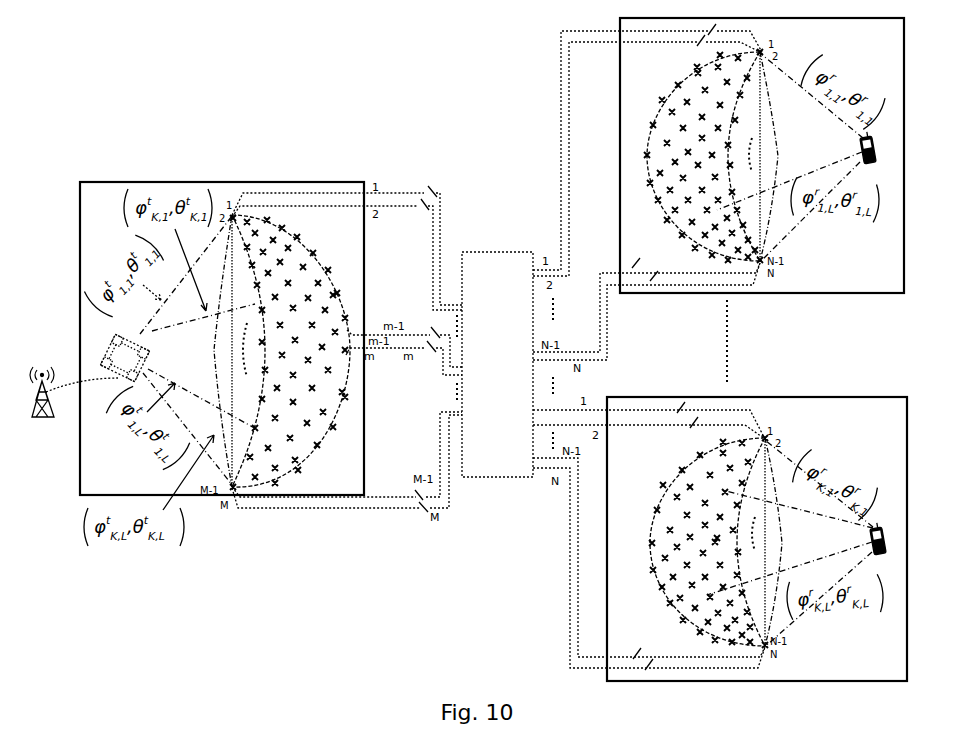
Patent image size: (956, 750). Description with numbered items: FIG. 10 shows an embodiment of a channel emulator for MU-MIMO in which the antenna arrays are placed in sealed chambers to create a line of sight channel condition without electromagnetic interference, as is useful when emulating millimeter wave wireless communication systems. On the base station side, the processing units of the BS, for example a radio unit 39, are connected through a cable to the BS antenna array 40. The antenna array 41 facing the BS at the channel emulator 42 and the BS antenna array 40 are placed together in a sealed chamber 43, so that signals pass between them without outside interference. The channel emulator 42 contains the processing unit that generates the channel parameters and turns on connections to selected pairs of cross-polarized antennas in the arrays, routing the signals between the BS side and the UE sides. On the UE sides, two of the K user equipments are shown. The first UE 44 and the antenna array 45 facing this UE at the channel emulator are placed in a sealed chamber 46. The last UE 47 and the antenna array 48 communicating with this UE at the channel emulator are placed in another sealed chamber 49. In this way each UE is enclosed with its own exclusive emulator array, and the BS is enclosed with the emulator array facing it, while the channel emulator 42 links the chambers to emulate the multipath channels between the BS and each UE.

The processing unit of the BS 39 is at (68, 392).
The antenna array 40 is at (125, 357).
The antenna array facing the BS 41 is at (285, 352).
The channel emulator 42 is at (497, 354).
The sealed chamber 43 is at (222, 330).
The first UE 44 is at (875, 152).
The antenna array facing this UE 45 is at (702, 156).
The sealed chamber 46 is at (774, 155).
The last UE 47 is at (885, 540).
The antenna array communicating with this UE 48 is at (710, 541).
The sealed chamber 49 is at (772, 539).